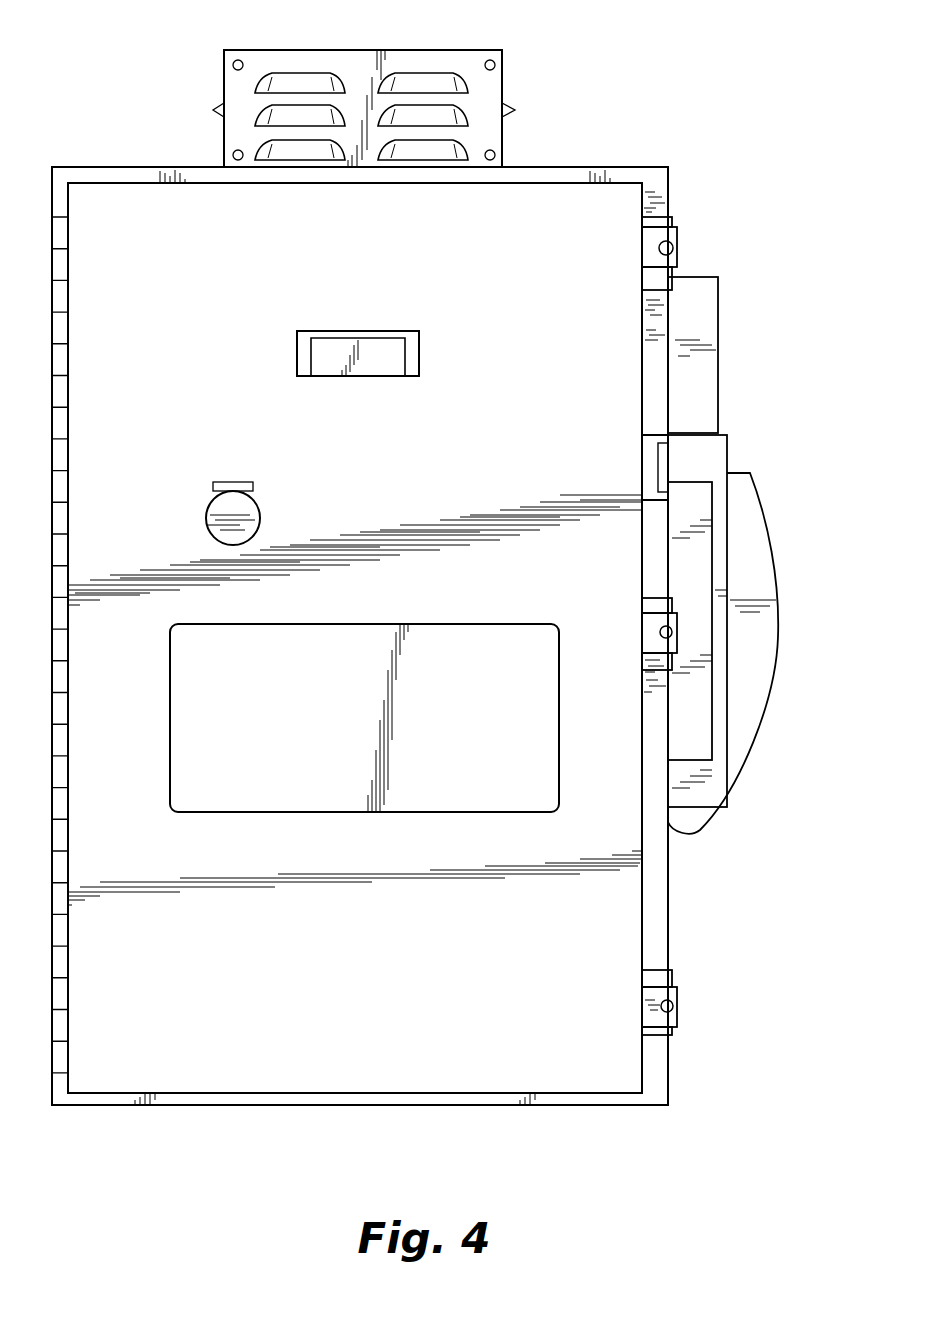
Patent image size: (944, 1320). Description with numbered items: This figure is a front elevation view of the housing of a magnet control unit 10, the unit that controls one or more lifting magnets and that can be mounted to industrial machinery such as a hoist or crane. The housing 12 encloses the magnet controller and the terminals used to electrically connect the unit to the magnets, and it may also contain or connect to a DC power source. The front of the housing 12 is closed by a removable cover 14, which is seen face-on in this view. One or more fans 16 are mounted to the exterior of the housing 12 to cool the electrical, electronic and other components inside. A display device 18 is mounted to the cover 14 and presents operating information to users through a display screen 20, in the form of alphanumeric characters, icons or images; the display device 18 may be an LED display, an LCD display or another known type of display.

The magnet control unit 10 is at (640, 108).
The housing 12 is at (113, 168).
The removable cover 14 is at (138, 1047).
The fan 16 is at (758, 500).
The display device 18 is at (402, 318).
The display screen 20 is at (367, 365).